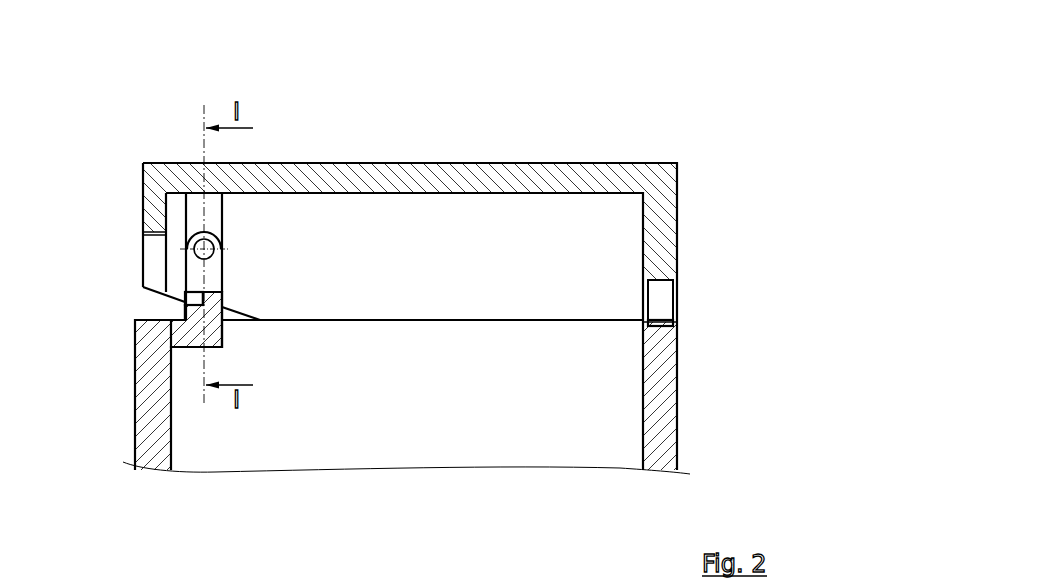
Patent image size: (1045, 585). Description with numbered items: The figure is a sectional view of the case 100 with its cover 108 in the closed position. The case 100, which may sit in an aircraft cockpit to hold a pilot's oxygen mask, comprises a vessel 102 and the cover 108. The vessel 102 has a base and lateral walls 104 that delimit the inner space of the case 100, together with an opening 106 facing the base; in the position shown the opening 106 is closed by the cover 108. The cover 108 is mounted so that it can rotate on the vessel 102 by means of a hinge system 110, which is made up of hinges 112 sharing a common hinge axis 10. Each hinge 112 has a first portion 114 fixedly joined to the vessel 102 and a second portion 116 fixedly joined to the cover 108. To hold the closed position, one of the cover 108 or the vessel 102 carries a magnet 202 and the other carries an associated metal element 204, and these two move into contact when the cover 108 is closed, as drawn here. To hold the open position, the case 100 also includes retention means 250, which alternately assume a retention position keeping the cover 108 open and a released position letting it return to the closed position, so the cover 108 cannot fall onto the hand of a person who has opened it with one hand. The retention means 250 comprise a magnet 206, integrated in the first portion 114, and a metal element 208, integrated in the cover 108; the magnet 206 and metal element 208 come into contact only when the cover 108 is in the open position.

The case 100 is at (650, 98).
The vessel 102 is at (592, 492).
The lateral walls 104 is at (652, 472).
The opening 106 is at (615, 321).
The cover 108 is at (555, 135).
The hinge system 110 is at (143, 122).
The hinge 112 is at (130, 280).
The first portion 114 is at (217, 280).
The second portion 116 is at (223, 215).
The hinge axis 10 is at (223, 240).
The magnet 202 is at (660, 297).
The metal element 204 is at (680, 322).
The magnet 206 is at (185, 303).
The metal element 208 is at (142, 258).
The retention means 250 is at (313, 383).